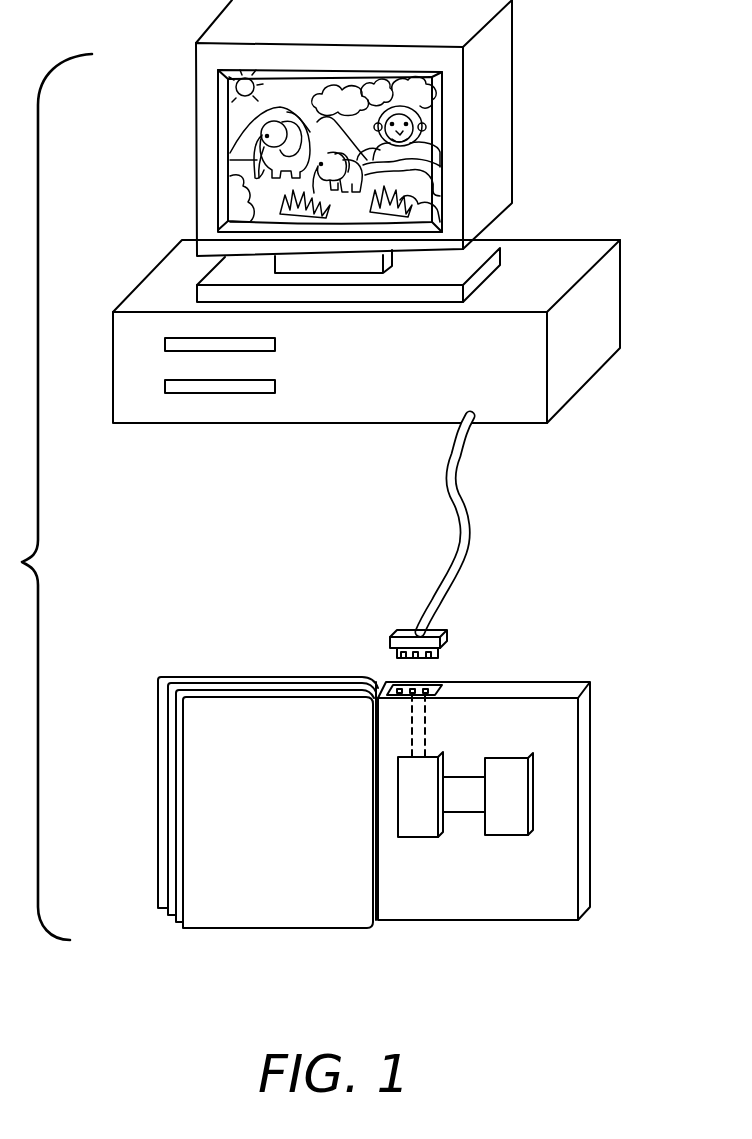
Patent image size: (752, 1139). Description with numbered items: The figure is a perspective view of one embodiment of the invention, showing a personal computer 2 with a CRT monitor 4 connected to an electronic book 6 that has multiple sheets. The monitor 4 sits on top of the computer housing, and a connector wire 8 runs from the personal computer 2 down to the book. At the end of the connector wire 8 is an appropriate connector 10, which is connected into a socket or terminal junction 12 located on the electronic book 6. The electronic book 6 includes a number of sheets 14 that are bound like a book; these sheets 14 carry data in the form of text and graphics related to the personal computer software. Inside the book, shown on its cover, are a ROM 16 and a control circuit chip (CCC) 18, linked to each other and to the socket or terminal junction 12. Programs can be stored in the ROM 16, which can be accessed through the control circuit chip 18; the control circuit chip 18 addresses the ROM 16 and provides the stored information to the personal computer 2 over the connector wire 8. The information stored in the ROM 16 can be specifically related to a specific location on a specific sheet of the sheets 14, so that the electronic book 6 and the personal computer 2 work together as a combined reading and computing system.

The personal computer 2 is at (545, 197).
The CRT monitor 4 is at (493, 80).
The electronic book 6 is at (410, 769).
The connector wire 8 is at (443, 487).
The connector 10 is at (399, 630).
The socket or terminal junction 12 is at (442, 670).
The sheets 14 is at (285, 895).
The ROM 16 is at (530, 778).
The control circuit chip (CCC) 18 is at (443, 763).